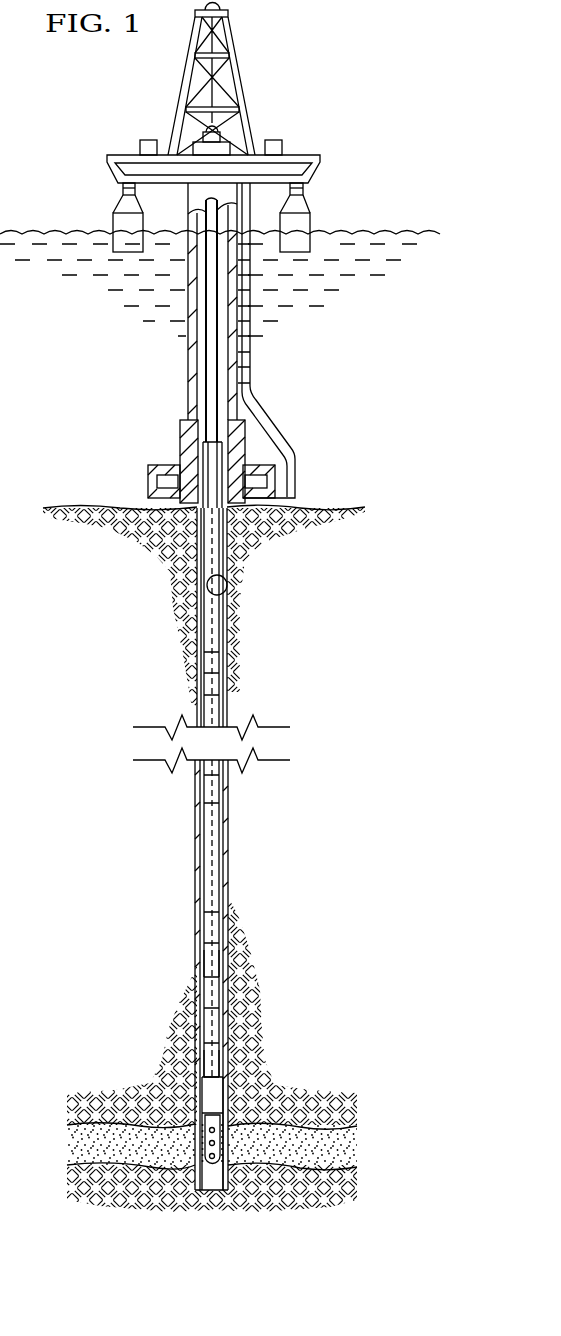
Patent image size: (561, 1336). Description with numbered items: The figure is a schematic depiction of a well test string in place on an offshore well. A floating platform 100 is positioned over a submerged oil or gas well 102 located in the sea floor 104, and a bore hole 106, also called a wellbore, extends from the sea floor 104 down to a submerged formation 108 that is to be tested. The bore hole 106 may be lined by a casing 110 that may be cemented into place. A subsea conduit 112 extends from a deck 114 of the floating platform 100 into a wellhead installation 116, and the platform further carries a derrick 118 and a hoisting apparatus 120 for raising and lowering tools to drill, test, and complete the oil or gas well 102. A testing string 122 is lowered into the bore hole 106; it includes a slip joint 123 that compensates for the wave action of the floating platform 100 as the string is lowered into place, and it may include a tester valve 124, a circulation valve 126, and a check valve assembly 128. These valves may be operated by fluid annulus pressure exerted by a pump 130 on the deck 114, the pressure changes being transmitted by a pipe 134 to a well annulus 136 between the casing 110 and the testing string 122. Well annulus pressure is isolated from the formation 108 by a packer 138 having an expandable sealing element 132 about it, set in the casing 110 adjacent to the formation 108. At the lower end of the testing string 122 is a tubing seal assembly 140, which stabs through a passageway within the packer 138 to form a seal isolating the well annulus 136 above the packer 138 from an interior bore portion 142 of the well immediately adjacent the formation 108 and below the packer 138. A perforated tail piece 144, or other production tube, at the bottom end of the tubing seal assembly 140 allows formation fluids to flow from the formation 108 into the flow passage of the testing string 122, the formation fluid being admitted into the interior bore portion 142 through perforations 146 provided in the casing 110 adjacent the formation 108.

The floating platform 100 is at (381, 92).
The oil or gas well 102 is at (131, 477).
The sea floor 104 is at (313, 506).
The bore hole 106 is at (228, 583).
The submerged formation 108 is at (323, 1157).
The casing 110 is at (192, 603).
The subsea conduit 112 is at (190, 402).
The deck 114 is at (124, 154).
The wellhead installation 116 is at (240, 440).
The derrick 118 is at (240, 72).
The hoisting apparatus 120 is at (199, 140).
The testing string 122 is at (205, 363).
The slip joint 123 is at (210, 662).
The tester valve 124 is at (210, 960).
The circulation valve 126 is at (210, 925).
The check valve assembly 128 is at (213, 992).
The pump 130 is at (272, 140).
The expandable sealing element 132 is at (215, 1093).
The pipe 134 is at (251, 362).
The well annulus 136 is at (217, 627).
The packer 138 is at (210, 1062).
The tubing seal assembly 140 is at (210, 1028).
The interior bore portion 142 is at (216, 1185).
The perforated tail piece 144 is at (165, 1103).
The perforations 146 is at (212, 1164).